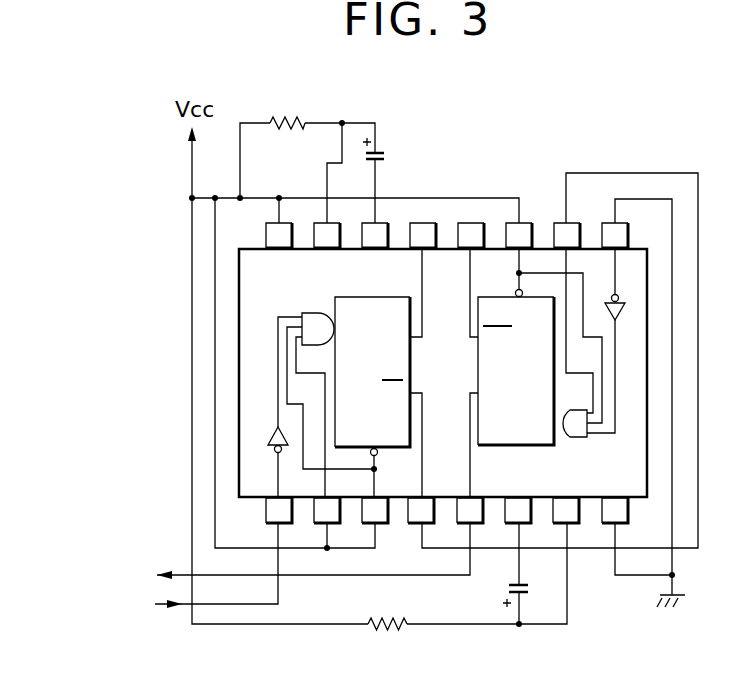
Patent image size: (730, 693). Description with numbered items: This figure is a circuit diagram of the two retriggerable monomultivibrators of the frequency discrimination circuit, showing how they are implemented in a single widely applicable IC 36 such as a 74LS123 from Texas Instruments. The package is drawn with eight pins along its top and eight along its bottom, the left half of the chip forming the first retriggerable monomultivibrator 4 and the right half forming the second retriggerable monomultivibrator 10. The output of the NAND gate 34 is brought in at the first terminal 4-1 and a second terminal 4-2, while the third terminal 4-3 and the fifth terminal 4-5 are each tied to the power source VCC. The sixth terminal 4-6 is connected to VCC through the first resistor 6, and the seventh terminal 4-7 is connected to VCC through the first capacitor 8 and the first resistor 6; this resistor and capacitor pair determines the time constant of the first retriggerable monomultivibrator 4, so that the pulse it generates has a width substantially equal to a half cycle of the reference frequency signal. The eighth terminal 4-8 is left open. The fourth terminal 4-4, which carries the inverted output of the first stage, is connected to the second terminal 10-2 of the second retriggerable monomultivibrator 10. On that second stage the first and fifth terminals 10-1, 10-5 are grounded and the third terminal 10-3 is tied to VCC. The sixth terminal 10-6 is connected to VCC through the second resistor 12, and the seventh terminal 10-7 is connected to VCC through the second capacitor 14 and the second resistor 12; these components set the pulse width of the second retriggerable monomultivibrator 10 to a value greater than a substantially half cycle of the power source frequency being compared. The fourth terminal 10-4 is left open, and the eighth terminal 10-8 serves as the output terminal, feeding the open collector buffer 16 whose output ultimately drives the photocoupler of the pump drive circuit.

The first retriggerable monomultivibrator 4 is at (312, 295).
The first terminal 4-1 is at (267, 508).
The second terminal 4-2 is at (314, 528).
The third terminal 4-3 is at (365, 528).
The fourth terminal 4-4 is at (412, 521).
The fifth terminal 4-5 is at (270, 224).
The sixth terminal 4-6 is at (318, 223).
The seventh terminal 4-7 is at (374, 240).
The eighth terminal 4-8 is at (421, 226).
The first resistor 6 is at (283, 121).
The first capacitor 8 is at (386, 154).
The second retriggerable monomultivibrator 10 is at (569, 460).
The first terminal 10-1 is at (622, 230).
The second terminal 10-2 is at (570, 230).
The third terminal 10-3 is at (527, 228).
The fourth terminal 10-4 is at (466, 228).
The fifth terminal 10-5 is at (620, 507).
The sixth terminal 10-6 is at (573, 523).
The seventh terminal 10-7 is at (519, 507).
The eighth terminal 10-8 is at (461, 523).
The second resistor 12 is at (385, 633).
The second capacitor 14 is at (502, 590).
The buffer 16 is at (87, 575).
The NAND gate 34 is at (98, 604).
The IC 36 is at (655, 262).